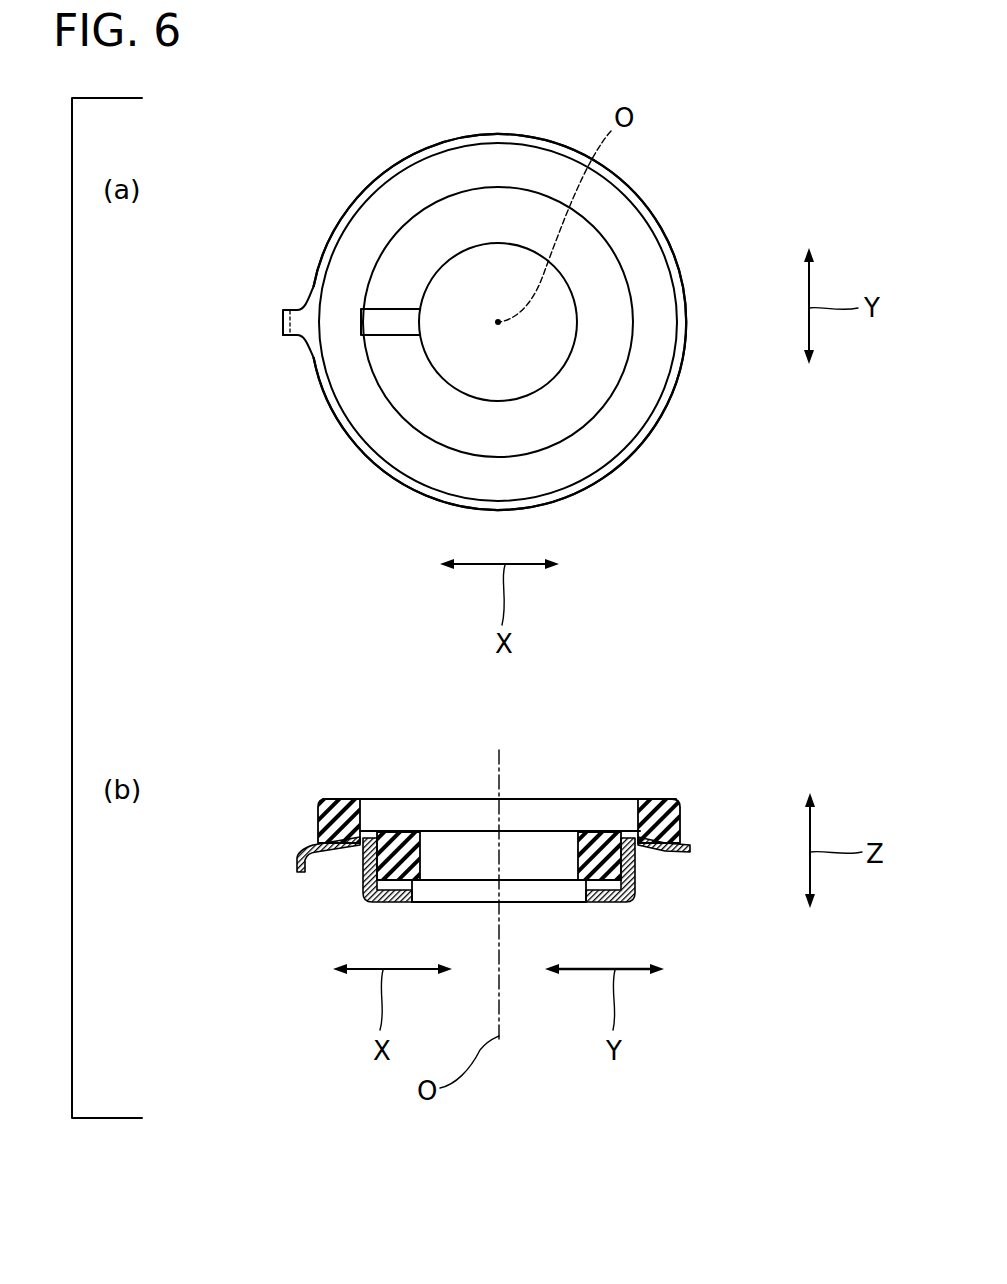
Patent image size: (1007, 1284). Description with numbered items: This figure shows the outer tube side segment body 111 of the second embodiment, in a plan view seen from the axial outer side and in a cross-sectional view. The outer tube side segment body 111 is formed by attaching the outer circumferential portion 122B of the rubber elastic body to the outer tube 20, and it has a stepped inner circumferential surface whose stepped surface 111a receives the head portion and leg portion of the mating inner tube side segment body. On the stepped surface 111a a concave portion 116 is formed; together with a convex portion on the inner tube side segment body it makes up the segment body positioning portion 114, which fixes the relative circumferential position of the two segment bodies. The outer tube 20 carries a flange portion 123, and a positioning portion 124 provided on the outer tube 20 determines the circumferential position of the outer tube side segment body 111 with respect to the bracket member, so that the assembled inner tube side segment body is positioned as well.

The outer tube side segment body 111 is at (665, 190).
The stepped surface 111a is at (596, 378).
The segment body positioning portion 114 is at (382, 320).
The concave portion 116 is at (409, 551).
The outer circumferential portion 122B is at (653, 278).
The flange portion 123 is at (686, 364).
The positioning portion 124 is at (290, 335).
The outer tube 20 is at (633, 868).